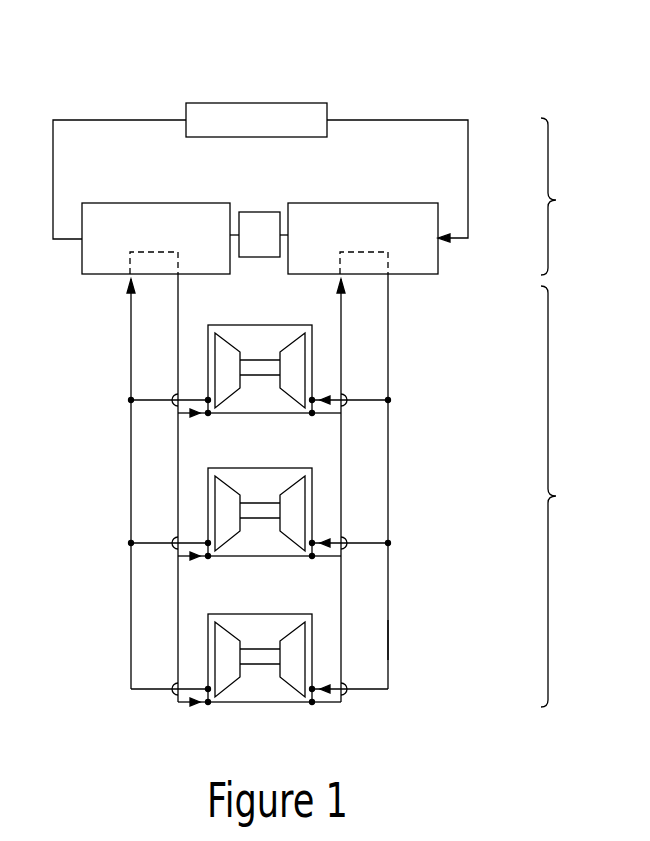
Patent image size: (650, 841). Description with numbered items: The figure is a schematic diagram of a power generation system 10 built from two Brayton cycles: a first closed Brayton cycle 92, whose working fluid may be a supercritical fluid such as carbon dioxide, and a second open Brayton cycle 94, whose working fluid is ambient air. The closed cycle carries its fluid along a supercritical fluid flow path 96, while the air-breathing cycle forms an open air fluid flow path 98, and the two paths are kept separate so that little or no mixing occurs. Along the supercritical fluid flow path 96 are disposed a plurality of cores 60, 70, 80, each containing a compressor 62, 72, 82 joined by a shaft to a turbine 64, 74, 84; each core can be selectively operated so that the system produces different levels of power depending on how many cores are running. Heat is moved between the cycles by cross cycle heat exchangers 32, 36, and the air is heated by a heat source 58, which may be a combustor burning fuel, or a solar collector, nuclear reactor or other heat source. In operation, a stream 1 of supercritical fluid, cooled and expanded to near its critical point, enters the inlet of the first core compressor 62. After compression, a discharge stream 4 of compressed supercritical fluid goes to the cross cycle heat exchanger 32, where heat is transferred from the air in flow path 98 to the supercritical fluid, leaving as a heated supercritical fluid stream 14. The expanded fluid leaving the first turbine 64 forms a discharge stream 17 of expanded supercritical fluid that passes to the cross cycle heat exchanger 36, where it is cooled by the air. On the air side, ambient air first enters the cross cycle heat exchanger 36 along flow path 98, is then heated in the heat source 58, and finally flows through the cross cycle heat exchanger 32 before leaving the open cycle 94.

The power generation system 10 is at (120, 76).
The air fluid flow path 98 is at (410, 103).
The second open Brayton cycle 94 is at (569, 196).
The first closed Brayton cycle 92 is at (569, 496).
The supercritical fluid flow path 96 is at (404, 640).
The cross cycle heat exchanger 32 is at (166, 242).
The cross cycle heat exchanger 36 is at (374, 242).
The heat source 58 is at (271, 246).
The heated supercritical fluid stream 14 is at (178, 373).
The discharge stream of compressed supercritical fluid 4 is at (131, 373).
The discharge stream of expanded supercritical fluid 17 is at (343, 358).
The stream of supercritical fluid 1 is at (388, 377).
The first core 60 is at (271, 356).
The turbine 64 is at (236, 383).
The compressor 62 is at (303, 383).
The core 70 is at (271, 499).
The turbine 74 is at (236, 526).
The compressor 72 is at (303, 526).
The core 80 is at (271, 645).
The turbine 84 is at (236, 672).
The compressor 82 is at (303, 672).